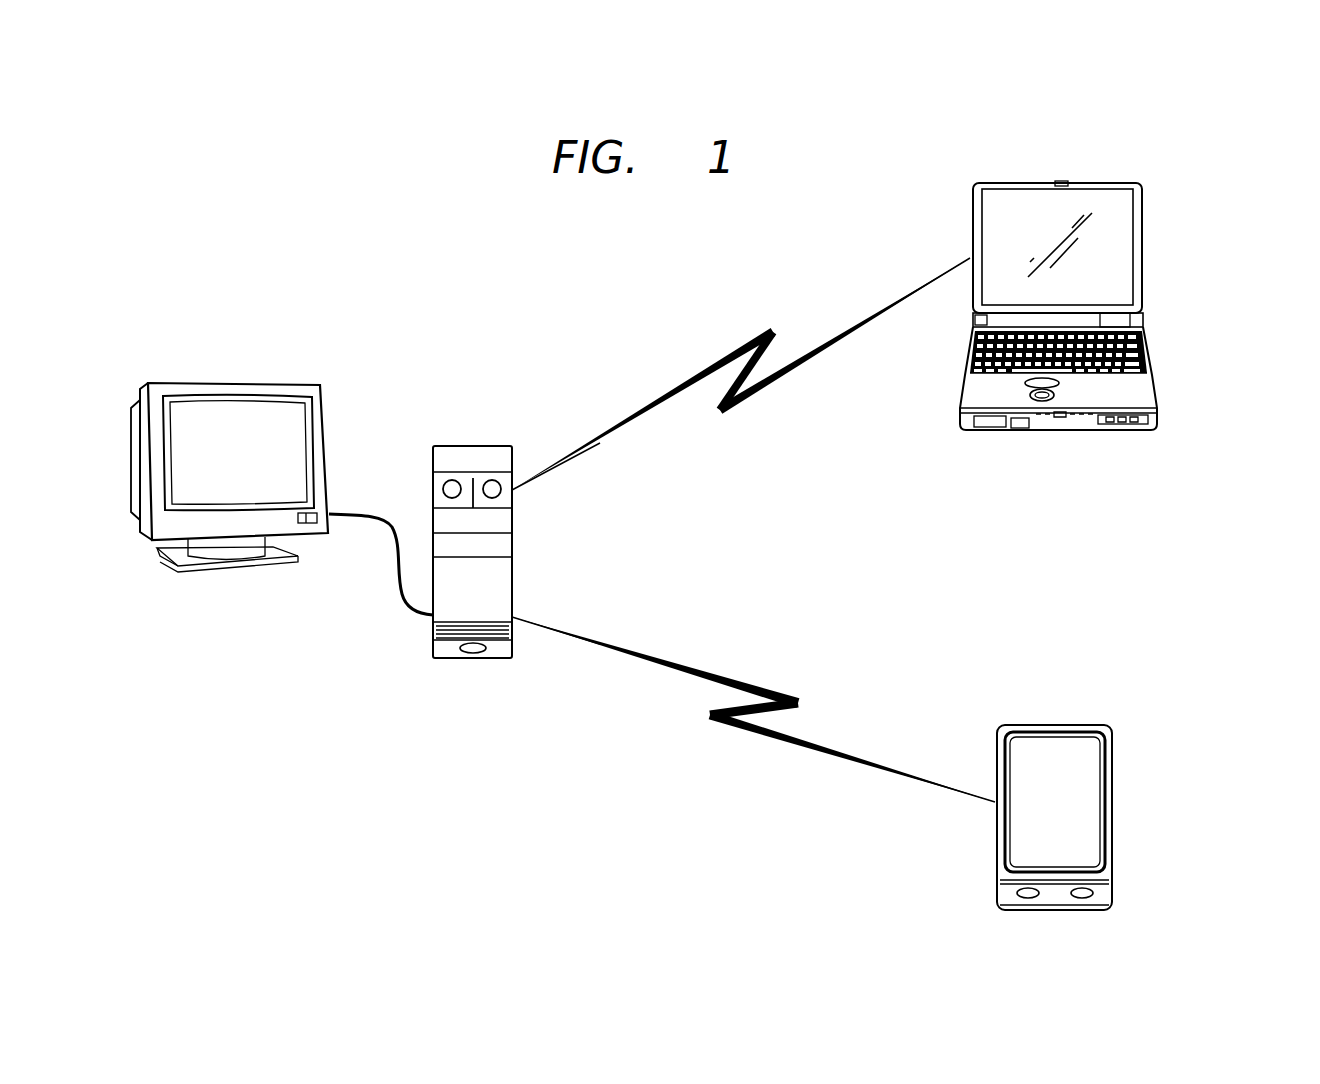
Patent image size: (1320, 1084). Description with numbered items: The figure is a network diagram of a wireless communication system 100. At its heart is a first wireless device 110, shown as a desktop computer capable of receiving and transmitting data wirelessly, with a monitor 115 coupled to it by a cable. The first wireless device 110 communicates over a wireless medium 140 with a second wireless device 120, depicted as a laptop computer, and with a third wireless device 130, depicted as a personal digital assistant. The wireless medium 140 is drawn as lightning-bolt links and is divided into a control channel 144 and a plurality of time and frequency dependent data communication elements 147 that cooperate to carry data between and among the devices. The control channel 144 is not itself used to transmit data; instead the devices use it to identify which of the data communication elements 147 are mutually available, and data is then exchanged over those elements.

The wireless communication system 100 is at (1178, 126).
The first wireless device 110 is at (478, 446).
The monitor 115 is at (236, 382).
The second wireless device 120 is at (1064, 181).
The third wireless device 130 is at (1058, 723).
The wireless medium 140 is at (737, 399).
The control channel 144 is at (600, 440).
The time and frequency dependent data communication elements 147 is at (757, 330).